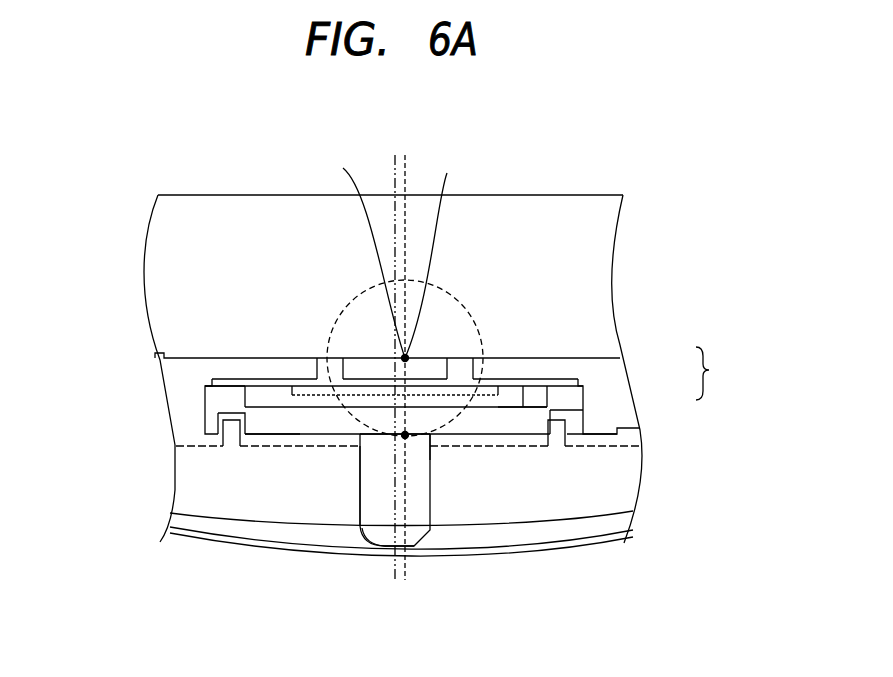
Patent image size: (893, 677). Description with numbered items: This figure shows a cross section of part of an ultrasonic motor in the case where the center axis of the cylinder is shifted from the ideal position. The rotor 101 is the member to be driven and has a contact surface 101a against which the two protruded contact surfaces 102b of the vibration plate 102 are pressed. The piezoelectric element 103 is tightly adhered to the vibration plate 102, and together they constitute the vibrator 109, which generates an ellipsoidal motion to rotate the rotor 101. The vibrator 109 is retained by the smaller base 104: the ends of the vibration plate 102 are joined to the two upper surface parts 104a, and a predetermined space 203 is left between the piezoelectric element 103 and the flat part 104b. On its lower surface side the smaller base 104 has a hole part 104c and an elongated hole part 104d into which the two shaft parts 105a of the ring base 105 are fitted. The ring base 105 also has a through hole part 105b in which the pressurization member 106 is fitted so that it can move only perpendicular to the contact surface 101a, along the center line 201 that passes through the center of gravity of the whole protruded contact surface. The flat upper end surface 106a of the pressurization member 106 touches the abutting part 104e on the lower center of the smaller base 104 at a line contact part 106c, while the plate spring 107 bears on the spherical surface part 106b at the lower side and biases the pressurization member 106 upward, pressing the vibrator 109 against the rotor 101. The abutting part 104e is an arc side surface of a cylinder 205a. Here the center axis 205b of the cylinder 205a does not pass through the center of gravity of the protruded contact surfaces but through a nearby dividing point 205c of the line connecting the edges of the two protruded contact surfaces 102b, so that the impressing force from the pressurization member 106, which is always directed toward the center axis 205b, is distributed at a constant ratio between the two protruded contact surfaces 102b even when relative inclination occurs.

The rotor 101 is at (547, 200).
The contact surface 101a is at (187, 360).
The vibration plate 102 is at (500, 382).
The protruded contact surfaces 102b is at (330, 358).
The piezoelectric element 103 is at (505, 396).
The smaller base 104 is at (585, 421).
The upper surface parts 104a is at (218, 385).
The flat part 104b is at (530, 380).
The hole part 104c is at (600, 440).
The elongated hole part 104d is at (205, 414).
The abutting part 104e is at (432, 444).
The ring base 105 is at (630, 496).
The shaft parts 105a is at (227, 438).
The through hole part 105b is at (360, 484).
The pressurization member 106 is at (385, 548).
The upper end surface 106a is at (367, 430).
The spherical surface part 106b is at (385, 558).
The line contact part 106c is at (407, 438).
The plate spring 107 is at (563, 540).
The vibrator 109 is at (719, 373).
The center line 201 is at (395, 160).
The predetermined space 203 is at (252, 440).
The cylinder 205a is at (360, 290).
The center axis 205b is at (363, 252).
The dividing point 205c is at (440, 255).